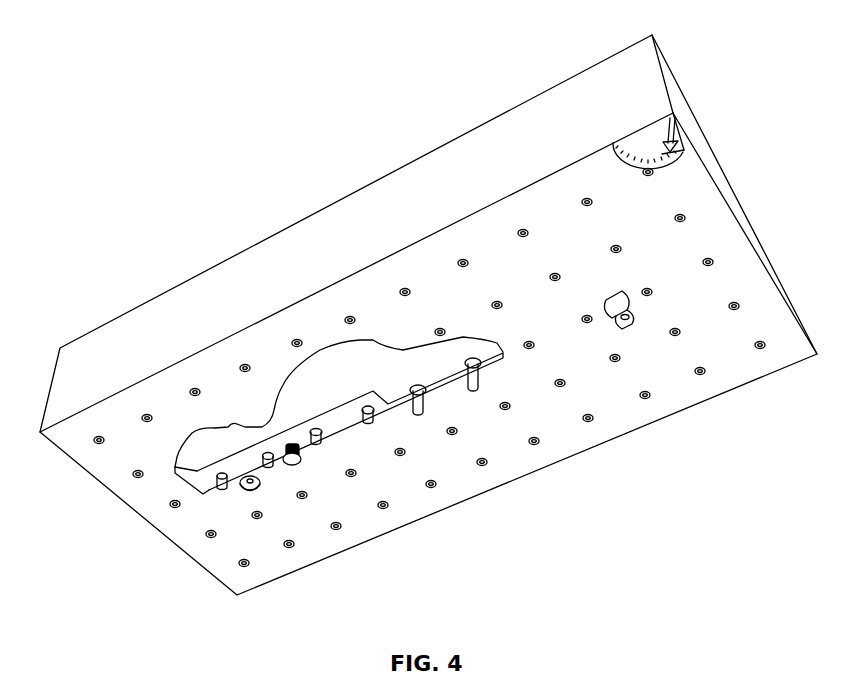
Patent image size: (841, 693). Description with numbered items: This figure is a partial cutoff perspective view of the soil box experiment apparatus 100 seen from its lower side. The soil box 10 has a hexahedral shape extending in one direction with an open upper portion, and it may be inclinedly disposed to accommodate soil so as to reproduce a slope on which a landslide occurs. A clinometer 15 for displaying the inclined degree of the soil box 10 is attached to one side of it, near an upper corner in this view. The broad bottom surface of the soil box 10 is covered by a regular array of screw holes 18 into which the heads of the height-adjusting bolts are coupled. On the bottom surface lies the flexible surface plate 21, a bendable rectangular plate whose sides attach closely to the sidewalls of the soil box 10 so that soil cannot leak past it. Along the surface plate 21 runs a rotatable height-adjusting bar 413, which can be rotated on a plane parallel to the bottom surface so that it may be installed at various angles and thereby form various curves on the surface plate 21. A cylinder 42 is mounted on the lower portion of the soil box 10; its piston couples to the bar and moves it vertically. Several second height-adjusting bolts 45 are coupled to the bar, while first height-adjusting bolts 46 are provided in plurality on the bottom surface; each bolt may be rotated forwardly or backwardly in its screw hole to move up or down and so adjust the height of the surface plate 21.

The fixture apparatus 100 is at (101, 168).
The soil box 10 is at (690, 94).
The clinometer 15 is at (686, 150).
The screw holes 18 is at (647, 288).
The surface plate 21 is at (200, 448).
The rotatable height-adjusting bar 413 is at (349, 398).
The cylinder 42 is at (301, 461).
The second height-adjusting bolt 45 is at (222, 491).
The first height-adjusting bolt 46 is at (468, 385).